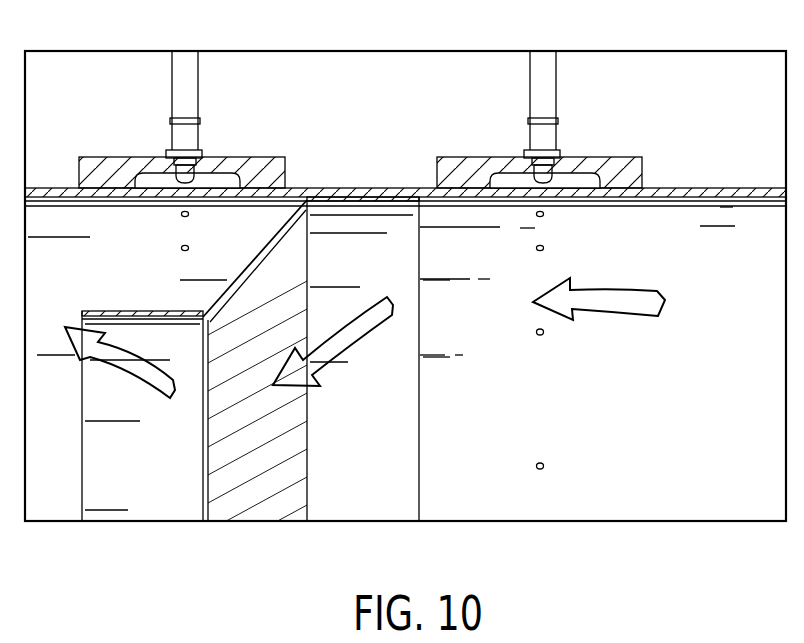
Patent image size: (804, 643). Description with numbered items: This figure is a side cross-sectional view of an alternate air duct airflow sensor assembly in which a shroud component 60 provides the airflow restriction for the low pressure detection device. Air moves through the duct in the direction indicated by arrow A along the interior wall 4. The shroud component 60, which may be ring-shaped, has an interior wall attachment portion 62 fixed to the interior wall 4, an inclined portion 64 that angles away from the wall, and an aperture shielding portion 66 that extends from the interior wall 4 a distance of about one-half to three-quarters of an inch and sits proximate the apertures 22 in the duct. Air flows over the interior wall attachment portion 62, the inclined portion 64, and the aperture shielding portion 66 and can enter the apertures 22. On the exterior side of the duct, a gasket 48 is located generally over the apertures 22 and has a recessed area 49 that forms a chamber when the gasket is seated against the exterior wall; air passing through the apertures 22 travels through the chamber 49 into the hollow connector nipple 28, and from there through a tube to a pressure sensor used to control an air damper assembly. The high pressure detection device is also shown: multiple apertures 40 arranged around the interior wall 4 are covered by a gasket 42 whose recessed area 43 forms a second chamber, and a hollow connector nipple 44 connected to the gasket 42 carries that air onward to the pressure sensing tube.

The hollow connector nipple 28 is at (178, 137).
The recessed area 49 is at (216, 176).
The gasket 48 is at (256, 176).
The shroud component 60 is at (334, 158).
The gasket 42 is at (476, 171).
The hollow connector nipple 44 is at (548, 137).
The recessed area 43 is at (576, 185).
The apertures 22 is at (183, 196).
The inclined portion 64 is at (248, 256).
The aperture shielding portion 66 is at (145, 308).
The interior wall attachment portion 62 is at (362, 204).
The interior wall 4 is at (470, 196).
The apertures 40 is at (540, 197).
The arrow A is at (632, 313).